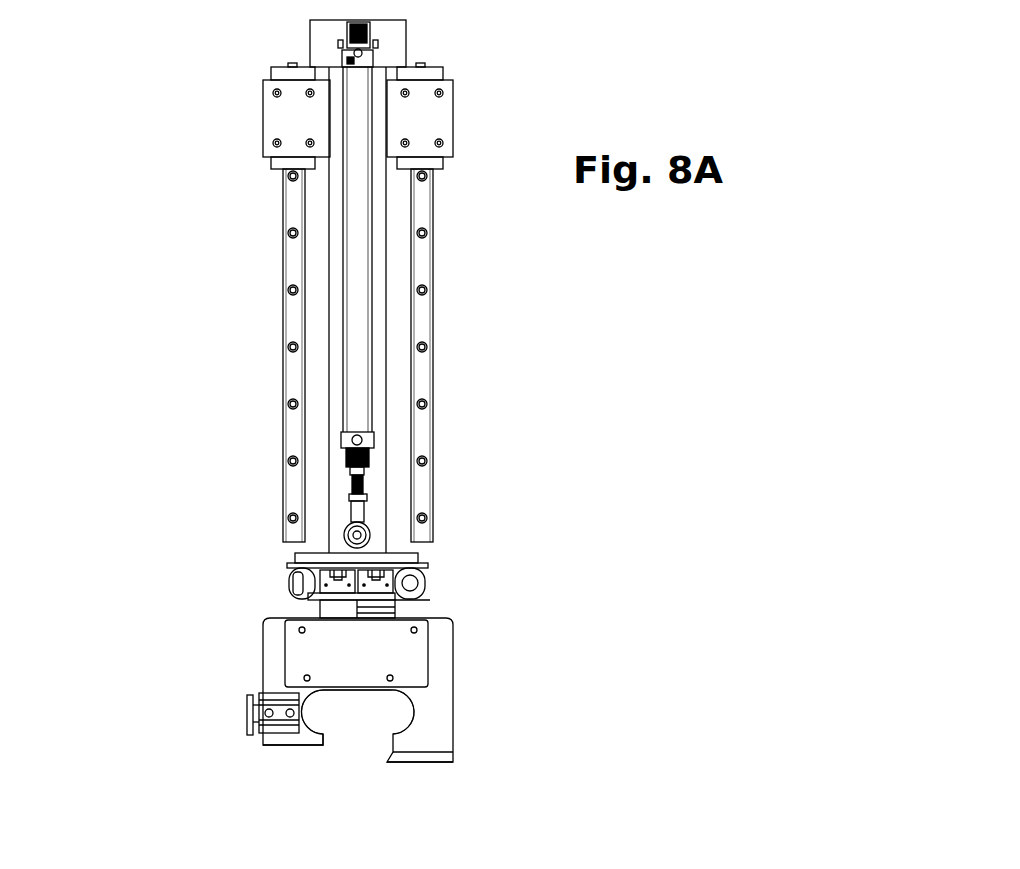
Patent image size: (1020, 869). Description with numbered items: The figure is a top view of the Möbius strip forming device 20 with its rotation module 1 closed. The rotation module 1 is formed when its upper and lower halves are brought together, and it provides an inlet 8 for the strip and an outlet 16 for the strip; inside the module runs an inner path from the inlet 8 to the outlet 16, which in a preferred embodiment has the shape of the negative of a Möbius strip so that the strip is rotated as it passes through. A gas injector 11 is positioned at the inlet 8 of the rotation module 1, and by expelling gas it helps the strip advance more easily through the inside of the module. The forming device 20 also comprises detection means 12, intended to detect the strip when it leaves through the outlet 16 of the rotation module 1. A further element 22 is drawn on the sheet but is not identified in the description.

The Möbius strip forming device 20 is at (362, 310).
The detection means 12 is at (358, 690).
The rotation module 1 is at (432, 708).
The gas injector 11 is at (422, 762).
The outlet 16 is at (322, 738).
The inlet 8 is at (393, 745).
The sensor clamp 22 is at (247, 695).